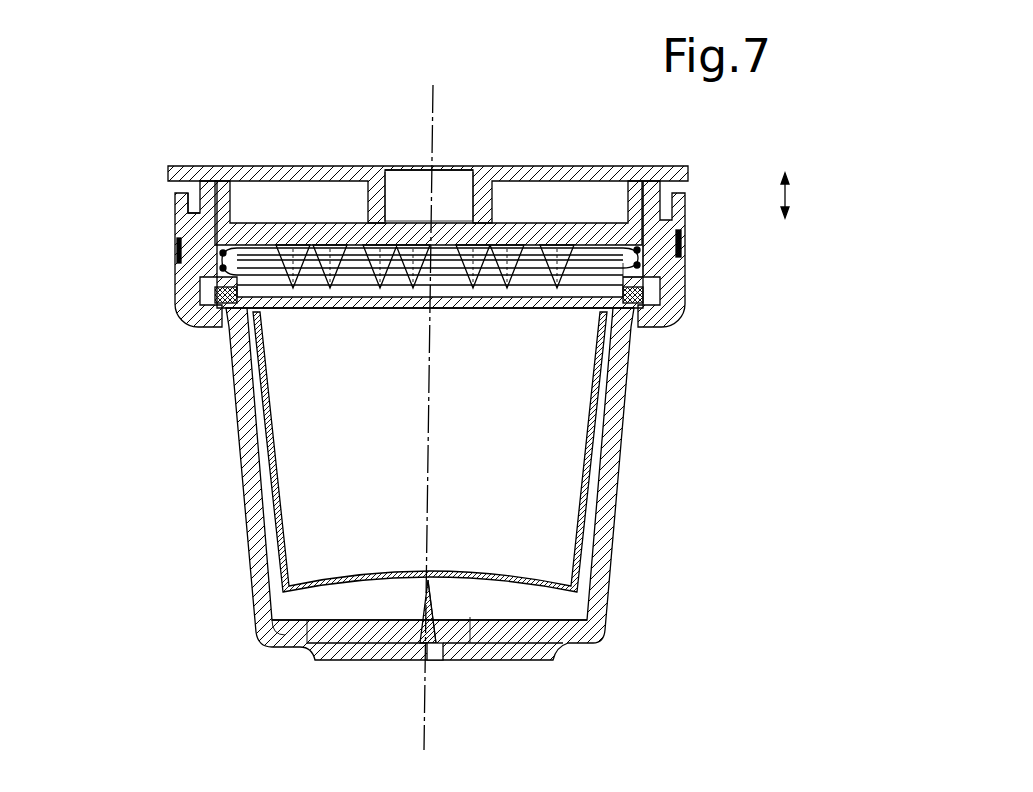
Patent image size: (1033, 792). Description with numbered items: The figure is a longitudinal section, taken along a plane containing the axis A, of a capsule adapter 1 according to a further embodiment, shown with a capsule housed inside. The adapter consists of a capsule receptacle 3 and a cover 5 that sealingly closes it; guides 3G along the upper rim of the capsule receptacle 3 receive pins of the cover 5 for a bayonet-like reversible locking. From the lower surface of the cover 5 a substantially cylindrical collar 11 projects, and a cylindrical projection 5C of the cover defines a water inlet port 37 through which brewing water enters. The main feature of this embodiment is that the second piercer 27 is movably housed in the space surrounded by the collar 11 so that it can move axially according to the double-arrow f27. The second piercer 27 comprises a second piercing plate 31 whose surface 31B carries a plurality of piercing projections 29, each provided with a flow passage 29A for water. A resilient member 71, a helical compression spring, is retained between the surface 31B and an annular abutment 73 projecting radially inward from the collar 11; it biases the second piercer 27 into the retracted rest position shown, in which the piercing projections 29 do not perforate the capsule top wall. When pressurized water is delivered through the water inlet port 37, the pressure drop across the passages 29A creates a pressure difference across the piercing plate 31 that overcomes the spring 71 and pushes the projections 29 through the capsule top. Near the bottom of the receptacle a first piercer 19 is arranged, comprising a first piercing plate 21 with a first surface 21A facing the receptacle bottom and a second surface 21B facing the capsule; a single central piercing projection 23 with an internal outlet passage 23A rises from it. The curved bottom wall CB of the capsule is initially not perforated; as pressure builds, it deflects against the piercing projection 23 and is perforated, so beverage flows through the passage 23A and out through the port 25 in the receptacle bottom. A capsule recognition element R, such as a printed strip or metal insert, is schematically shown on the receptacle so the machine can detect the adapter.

The capsule adapter 1 is at (707, 178).
The capsule receptacle 3 is at (637, 495).
The guides 3G is at (195, 207).
The cover 5 is at (573, 170).
The cylindrical projection 5C is at (468, 168).
The collar 11 is at (640, 251).
The first piercer 19 is at (567, 615).
The first piercing plate 21 is at (537, 635).
The first surface of first piercing plate 21A is at (357, 645).
The second surface of first piercing plate 21B is at (283, 613).
The piercing projection 23 is at (423, 610).
The outlet passage 23A is at (440, 610).
The port 25 is at (413, 652).
The second piercer 27 is at (655, 217).
The piercing projections 29 is at (392, 286).
The flow passage 29A is at (523, 295).
The second piercing plate 31 is at (263, 225).
The surface of second piercing plate 31B is at (225, 290).
The water inlet port 37 is at (412, 187).
The resilient member 71 is at (640, 266).
The annular abutment 73 is at (636, 292).
The axis A is at (424, 419).
The bottom wall of capsule CB is at (337, 578).
The capsule recognition element R is at (681, 240).
The double-arrow f27 is at (808, 195).